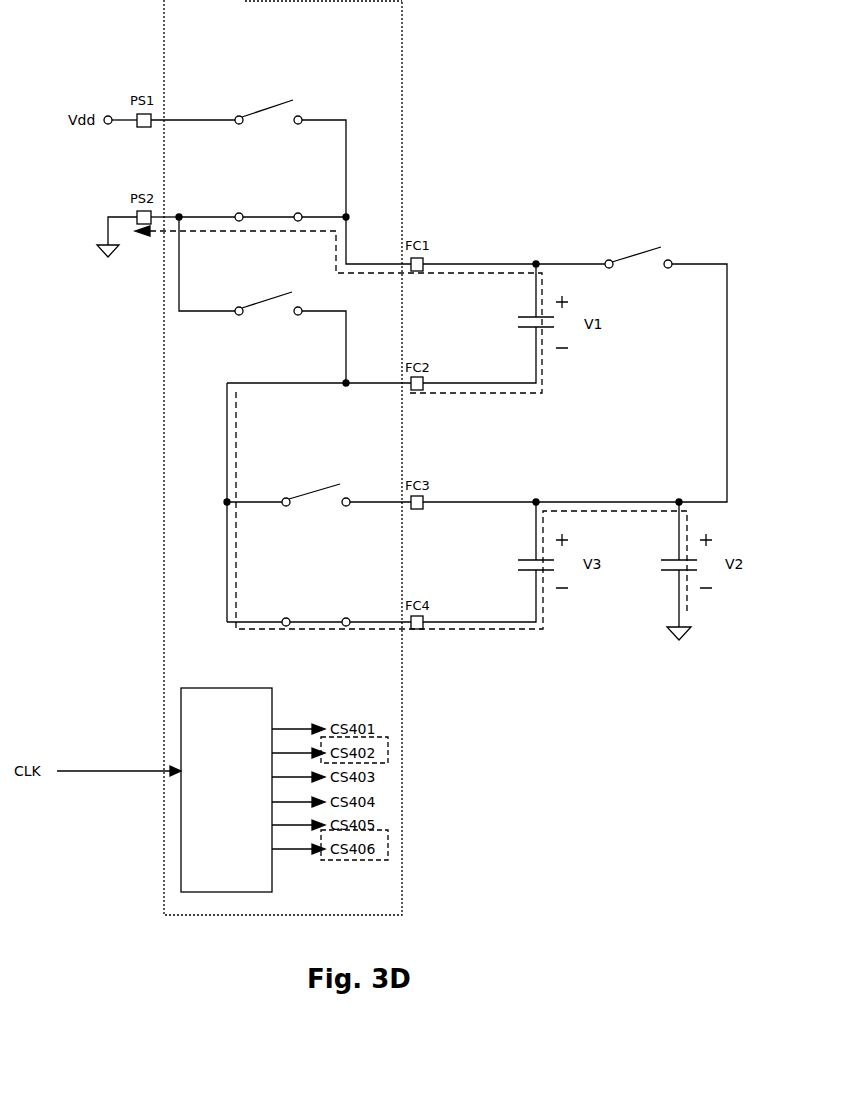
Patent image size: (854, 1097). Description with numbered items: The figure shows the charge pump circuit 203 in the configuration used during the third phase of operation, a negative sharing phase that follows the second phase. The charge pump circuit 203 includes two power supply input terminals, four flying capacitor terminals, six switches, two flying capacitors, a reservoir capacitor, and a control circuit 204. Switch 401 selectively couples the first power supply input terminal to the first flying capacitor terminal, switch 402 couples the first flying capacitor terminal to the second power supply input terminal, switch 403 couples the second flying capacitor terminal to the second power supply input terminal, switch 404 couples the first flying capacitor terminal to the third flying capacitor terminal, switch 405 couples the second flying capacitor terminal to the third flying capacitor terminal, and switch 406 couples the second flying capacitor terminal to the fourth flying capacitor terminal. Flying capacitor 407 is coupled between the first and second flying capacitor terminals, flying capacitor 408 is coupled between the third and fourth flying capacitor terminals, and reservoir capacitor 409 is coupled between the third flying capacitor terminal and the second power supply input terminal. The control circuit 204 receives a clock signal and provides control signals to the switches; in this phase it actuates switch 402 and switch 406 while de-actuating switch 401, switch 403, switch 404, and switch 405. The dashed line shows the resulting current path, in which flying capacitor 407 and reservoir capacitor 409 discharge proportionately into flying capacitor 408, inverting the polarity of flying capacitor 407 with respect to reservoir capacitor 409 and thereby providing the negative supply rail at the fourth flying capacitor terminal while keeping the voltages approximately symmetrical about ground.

The charge pump circuit 203 is at (380, 47).
The control circuit 204 is at (245, 688).
The switch 401 is at (250, 110).
The switch 402 is at (250, 208).
The switch 403 is at (250, 304).
The switch 404 is at (620, 255).
The switch 405 is at (296, 487).
The switch 406 is at (319, 596).
The flying capacitor 407 is at (528, 318).
The flying capacitor 408 is at (528, 560).
The reservoir capacitor 409 is at (670, 560).